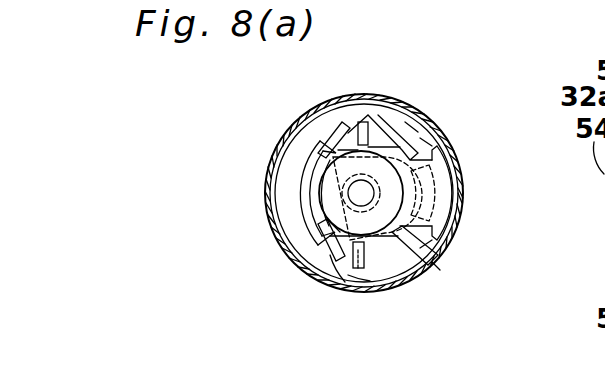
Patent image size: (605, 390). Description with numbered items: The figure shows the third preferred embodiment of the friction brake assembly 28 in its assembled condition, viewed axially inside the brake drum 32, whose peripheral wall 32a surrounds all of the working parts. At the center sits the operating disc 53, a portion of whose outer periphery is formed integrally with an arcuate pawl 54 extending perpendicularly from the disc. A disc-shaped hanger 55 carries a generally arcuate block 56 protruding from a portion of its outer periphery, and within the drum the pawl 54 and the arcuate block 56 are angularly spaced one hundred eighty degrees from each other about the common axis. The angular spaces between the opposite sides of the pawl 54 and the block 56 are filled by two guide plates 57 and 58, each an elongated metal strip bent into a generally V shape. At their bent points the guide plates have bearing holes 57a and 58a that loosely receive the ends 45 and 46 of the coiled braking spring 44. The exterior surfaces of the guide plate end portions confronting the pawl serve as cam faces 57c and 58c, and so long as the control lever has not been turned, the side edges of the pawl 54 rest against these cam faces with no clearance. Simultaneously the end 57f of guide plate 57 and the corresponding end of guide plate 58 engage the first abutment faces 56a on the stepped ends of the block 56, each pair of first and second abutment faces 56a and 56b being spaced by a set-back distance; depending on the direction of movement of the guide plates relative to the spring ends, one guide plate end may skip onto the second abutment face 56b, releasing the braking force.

The brake assembly 28 is at (268, 160).
The brake drum 32 is at (462, 211).
The peripheral wall 32a is at (270, 180).
The coiled braking spring 44 is at (328, 290).
The end of coiled braking spring 45 is at (346, 140).
The end of coiled braking spring 46 is at (353, 290).
The operating disc 53 is at (296, 220).
The arcuate pawl 54 is at (300, 196).
The hanger 55 is at (422, 290).
The arcuate block 56 is at (440, 180).
The first abutment face 56a is at (430, 120).
The second abutment face 56b is at (442, 140).
The guide plate 57 is at (392, 118).
The bearing hole 57a is at (363, 110).
The cam face 57c is at (320, 122).
The end of guide plate 57f is at (410, 123).
The guide plate 58 is at (310, 282).
The bearing hole 58a is at (377, 290).
The cam face 58c is at (290, 280).